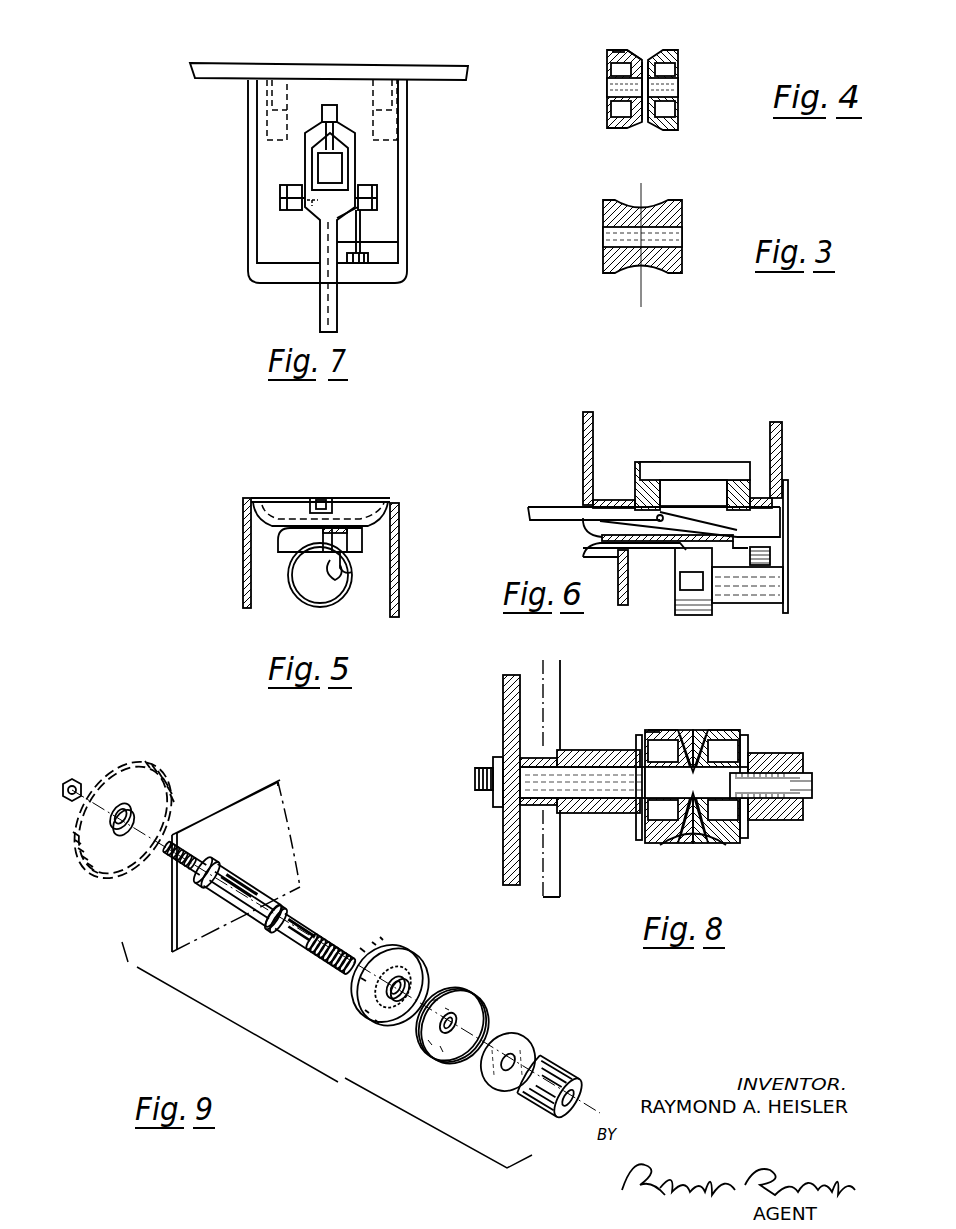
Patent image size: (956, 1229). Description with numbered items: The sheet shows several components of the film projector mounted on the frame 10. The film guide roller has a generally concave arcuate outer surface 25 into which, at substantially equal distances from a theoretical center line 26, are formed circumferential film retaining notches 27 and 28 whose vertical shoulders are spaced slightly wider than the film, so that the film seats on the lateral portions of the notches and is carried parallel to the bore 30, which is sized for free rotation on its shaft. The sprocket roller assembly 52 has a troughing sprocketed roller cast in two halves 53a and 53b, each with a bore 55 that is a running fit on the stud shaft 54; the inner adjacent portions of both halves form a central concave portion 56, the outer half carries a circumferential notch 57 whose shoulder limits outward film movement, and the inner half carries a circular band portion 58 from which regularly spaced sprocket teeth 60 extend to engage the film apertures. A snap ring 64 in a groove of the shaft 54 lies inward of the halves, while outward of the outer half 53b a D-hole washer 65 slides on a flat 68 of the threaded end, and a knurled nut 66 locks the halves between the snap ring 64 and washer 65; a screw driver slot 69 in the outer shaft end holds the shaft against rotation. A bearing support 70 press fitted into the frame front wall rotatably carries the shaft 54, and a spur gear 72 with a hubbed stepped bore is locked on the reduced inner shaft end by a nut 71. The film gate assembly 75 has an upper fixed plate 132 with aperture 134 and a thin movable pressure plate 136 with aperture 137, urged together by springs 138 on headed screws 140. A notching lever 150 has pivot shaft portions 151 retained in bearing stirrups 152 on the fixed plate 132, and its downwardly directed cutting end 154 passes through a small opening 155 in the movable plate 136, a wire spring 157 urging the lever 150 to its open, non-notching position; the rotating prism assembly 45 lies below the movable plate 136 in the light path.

In FIG. 8, the frame 10 is at (553, 698).
In FIG. 3, the outer surface 25 is at (641, 206).
In FIG. 3, the theoretical center line 26 is at (643, 295).
In FIG. 3, the film retaining notch 27 is at (621, 205).
In FIG. 3, the film retaining notch 28 is at (666, 206).
In FIG. 3, the bore 30 is at (681, 245).
In FIG. 5, the rotating prism assembly 45 is at (304, 608).
In FIG. 8, the sprocket roller assembly 52 is at (797, 736).
In FIG. 9, the sprocket roller assembly 52 is at (327, 1055).
In FIG. 4, the inner half of sprocket roller 53a is at (607, 53).
In FIG. 8, the inner half of sprocket roller 53a is at (648, 742).
In FIG. 9, the inner half of sprocket roller 53a is at (386, 962).
In FIG. 4, the outer half of sprocket roller 53b is at (680, 78).
In FIG. 8, the outer half of sprocket roller 53b is at (748, 735).
In FIG. 9, the outer half of sprocket roller 53b is at (532, 1023).
In FIG. 8, the stud shaft 54 is at (595, 790).
In FIG. 9, the stud shaft 54 is at (410, 988).
In FIG. 4, the bore 55 is at (678, 95).
In FIG. 9, the bore 55 is at (455, 1039).
In FIG. 4, the central concave portion 56 is at (660, 52).
In FIG. 8, the central concave portion 56 is at (700, 834).
In FIG. 4, the circumferential notch 57 is at (672, 52).
In FIG. 8, the circumferential notch 57 is at (728, 730).
In FIG. 9, the circumferential notch 57 is at (425, 1041).
In FIG. 4, the circular band portion 58 is at (618, 50).
In FIG. 8, the circular band portion 58 is at (660, 730).
In FIG. 9, the circular band portion 58 is at (410, 950).
In FIG. 4, the sprocket teeth 60 is at (630, 55).
In FIG. 8, the sprocket teeth 60 is at (680, 727).
In FIG. 9, the sprocket teeth 60 is at (365, 1015).
In FIG. 8, the snap ring 64 is at (640, 813).
In FIG. 9, the snap ring 64 is at (278, 934).
In FIG. 8, the washer 65 is at (746, 840).
In FIG. 9, the washer 65 is at (507, 1086).
In FIG. 8, the knurled nut 66 is at (805, 805).
In FIG. 9, the knurled nut 66 is at (570, 1081).
In FIG. 8, the flat 68 is at (780, 800).
In FIG. 9, the flat 68 is at (316, 940).
In FIG. 9, the screw driver slot 69 is at (340, 968).
In FIG. 8, the bearing support 70 is at (576, 752).
In FIG. 9, the bearing support 70 is at (240, 885).
In FIG. 8, the nut 71 is at (498, 805).
In FIG. 9, the nut 71 is at (74, 780).
In FIG. 8, the spur gear 72 is at (509, 708).
In FIG. 9, the spur gear 72 is at (144, 762).
In FIG. 5, the film gate assembly 75 is at (200, 543).
In FIG. 6, the film gate assembly 75 is at (533, 430).
In FIG. 7, the fixed plate 132 is at (388, 223).
In FIG. 5, the fixed plate 132 is at (372, 507).
In FIG. 6, the fixed plate 132 is at (590, 528).
In FIG. 6, the aperture 134 is at (685, 535).
In FIG. 5, the movable pressure plate 136 is at (365, 545).
In FIG. 6, the aperture 137 is at (688, 545).
In FIG. 5, the springs 138 is at (365, 555).
In FIG. 6, the springs 138 is at (772, 556).
In FIG. 6, the headed screws 140 is at (766, 574).
In FIG. 6, the notching lever 150 is at (536, 510).
In FIG. 7, the pivot shaft portions 151 is at (283, 200).
In FIG. 6, the pivot shaft portions 151 is at (655, 478).
In FIG. 7, the bearing stirrups 152 is at (378, 190).
In FIG. 6, the cutting end 154 is at (718, 548).
In FIG. 6, the small opening 155 is at (735, 531).
In FIG. 7, the wire spring 157 is at (358, 242).